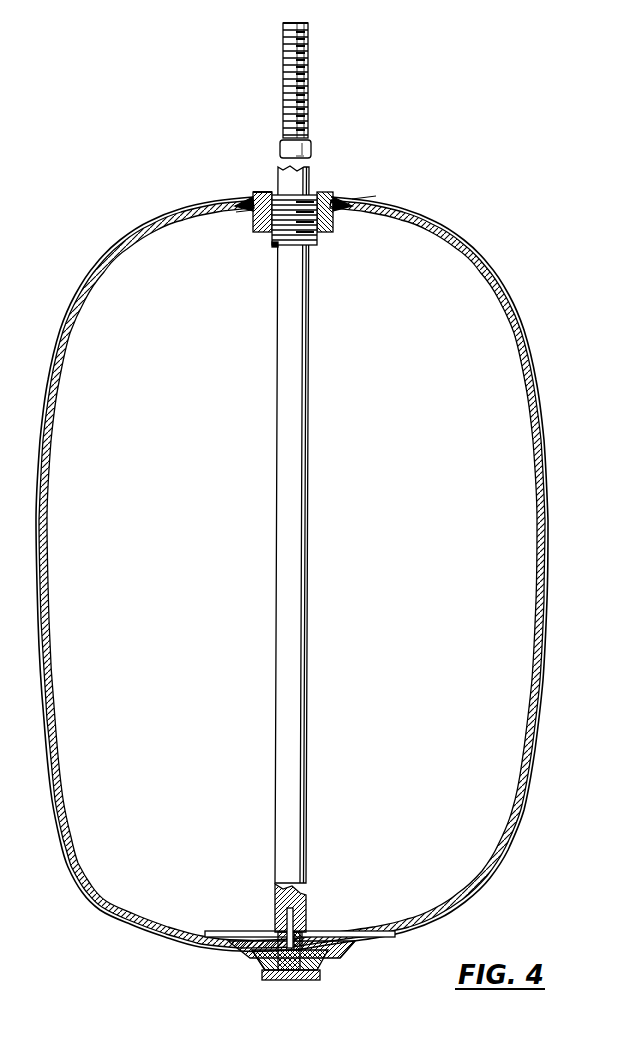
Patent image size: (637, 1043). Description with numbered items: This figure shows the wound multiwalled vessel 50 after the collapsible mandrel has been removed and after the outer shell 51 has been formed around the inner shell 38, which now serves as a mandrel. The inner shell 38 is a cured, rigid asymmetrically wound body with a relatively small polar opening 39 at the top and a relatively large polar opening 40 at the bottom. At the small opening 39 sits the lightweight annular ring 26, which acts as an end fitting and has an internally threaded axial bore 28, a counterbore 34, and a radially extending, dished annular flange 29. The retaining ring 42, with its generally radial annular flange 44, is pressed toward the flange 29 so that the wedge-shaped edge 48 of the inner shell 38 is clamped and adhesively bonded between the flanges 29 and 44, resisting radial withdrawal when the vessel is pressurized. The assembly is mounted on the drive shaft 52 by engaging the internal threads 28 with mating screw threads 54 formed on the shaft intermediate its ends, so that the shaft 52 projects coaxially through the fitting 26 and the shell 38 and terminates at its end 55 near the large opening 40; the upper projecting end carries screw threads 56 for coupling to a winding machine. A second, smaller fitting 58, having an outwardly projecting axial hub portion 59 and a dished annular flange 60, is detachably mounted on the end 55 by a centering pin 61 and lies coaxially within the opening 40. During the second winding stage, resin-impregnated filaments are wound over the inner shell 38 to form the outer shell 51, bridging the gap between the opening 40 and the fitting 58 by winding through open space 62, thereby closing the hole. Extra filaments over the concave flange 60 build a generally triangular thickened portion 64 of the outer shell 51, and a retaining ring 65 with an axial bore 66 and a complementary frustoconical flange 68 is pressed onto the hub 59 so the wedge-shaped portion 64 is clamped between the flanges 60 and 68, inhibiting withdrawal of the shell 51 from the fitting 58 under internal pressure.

The annular ring 26 is at (264, 229).
The internally threaded axial bore 28 is at (274, 248).
The radially extending annular flange 29 is at (250, 212).
The counterbore 34 is at (268, 194).
The inner shell 38 is at (523, 733).
The small polar opening 39 is at (331, 192).
The large polar opening 40 is at (357, 937).
The retaining ring 42 is at (340, 196).
The annular radial flange 44 is at (355, 200).
The shell edge 48 is at (247, 201).
The multiwalled vessel 50 is at (464, 230).
The outer shell 51 is at (531, 779).
The drive shaft 52 is at (308, 522).
The screw threads 54 is at (318, 240).
The shaft end 55 is at (310, 907).
The screw threads 56 is at (310, 100).
The fitting 58 is at (273, 928).
The axial hub portion 59 is at (303, 933).
The annular flange 60 is at (347, 953).
The centering pin 61 is at (290, 918).
The open-space winding 62 is at (181, 944).
The thickened portion 64 is at (247, 950).
The retaining ring 65 is at (267, 973).
The axial bore 66 is at (293, 976).
The frustoconical flange 68 is at (267, 953).